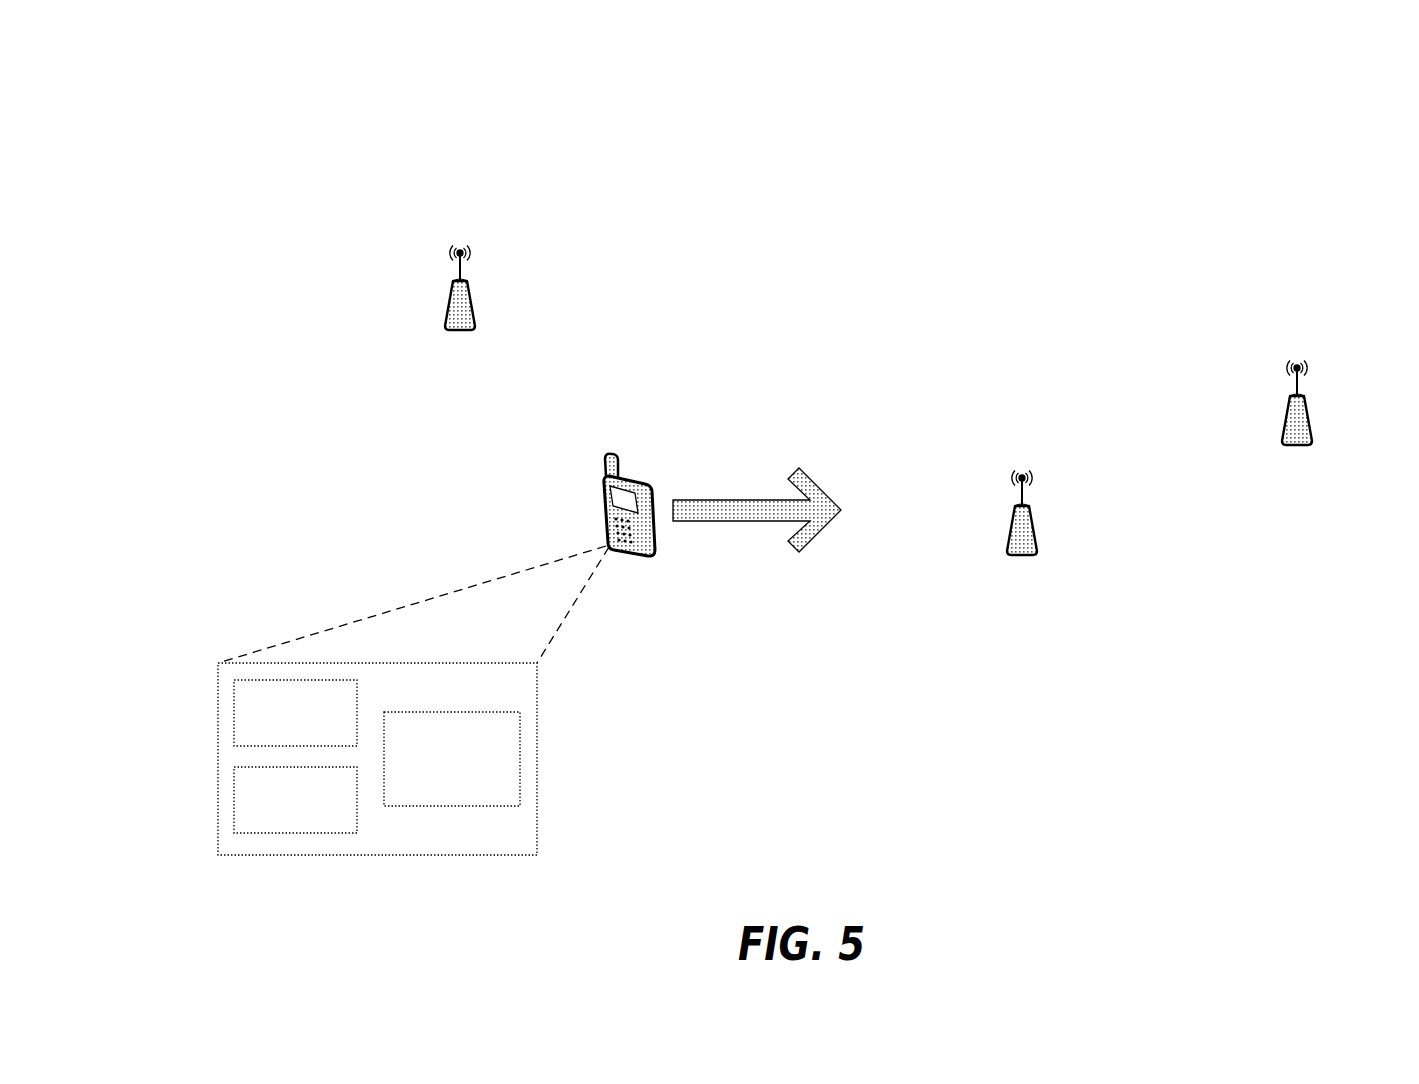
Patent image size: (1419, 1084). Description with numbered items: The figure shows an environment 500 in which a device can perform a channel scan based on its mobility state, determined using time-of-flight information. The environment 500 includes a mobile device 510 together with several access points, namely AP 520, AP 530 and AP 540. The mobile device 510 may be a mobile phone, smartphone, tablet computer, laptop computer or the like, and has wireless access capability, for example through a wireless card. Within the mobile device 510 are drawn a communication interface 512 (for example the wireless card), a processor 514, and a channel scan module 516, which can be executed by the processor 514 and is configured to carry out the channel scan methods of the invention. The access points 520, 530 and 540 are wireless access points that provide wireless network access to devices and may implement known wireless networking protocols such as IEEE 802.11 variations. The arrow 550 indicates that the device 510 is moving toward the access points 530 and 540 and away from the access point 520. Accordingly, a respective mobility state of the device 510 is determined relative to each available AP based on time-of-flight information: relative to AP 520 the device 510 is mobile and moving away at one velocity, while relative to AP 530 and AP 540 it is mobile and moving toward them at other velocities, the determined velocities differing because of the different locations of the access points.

The environment 500 is at (335, 63).
The mobile device 510 is at (631, 453).
The communication interface 512 is at (234, 712).
The processor 514 is at (234, 795).
The channel scan module 516 is at (522, 757).
The access point 520 is at (482, 288).
The access point 530 is at (1057, 523).
The access point 540 is at (1320, 398).
The arrow 550 is at (818, 467).